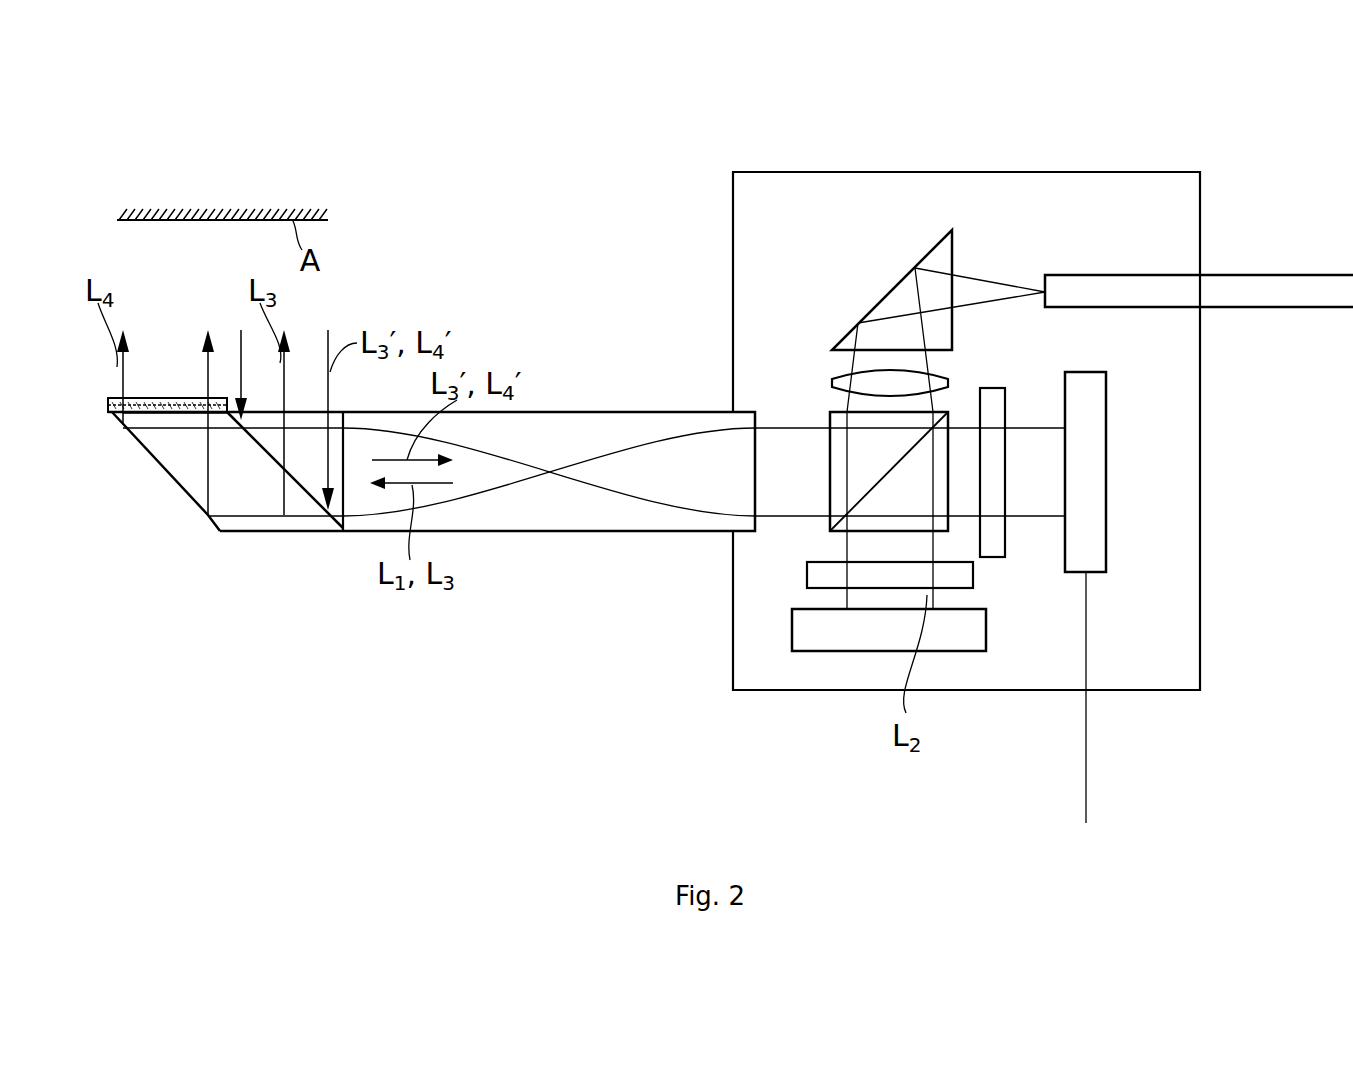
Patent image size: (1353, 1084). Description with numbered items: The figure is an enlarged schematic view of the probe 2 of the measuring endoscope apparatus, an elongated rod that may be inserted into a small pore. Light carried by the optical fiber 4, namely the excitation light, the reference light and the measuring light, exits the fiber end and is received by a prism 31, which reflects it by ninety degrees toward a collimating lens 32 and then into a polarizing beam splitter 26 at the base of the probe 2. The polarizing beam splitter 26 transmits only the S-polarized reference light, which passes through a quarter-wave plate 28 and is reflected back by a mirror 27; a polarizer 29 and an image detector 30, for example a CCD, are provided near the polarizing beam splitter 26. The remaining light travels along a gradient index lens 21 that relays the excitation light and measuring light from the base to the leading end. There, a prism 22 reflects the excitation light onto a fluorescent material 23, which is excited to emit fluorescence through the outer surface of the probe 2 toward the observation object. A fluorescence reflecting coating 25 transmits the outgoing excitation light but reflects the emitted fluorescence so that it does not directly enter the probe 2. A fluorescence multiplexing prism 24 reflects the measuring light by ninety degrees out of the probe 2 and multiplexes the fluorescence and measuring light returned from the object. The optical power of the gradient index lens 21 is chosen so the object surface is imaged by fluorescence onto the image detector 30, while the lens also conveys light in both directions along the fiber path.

The probe 2 is at (624, 190).
The optical fiber 4 is at (1270, 273).
The gradient index lens 21 is at (623, 408).
The prism 22 is at (177, 483).
The fluorescent material 23 is at (108, 398).
The fluorescence multiplexing prism 24 is at (298, 488).
The fluorescence reflecting coating 25 is at (158, 414).
The polarizing beam splitter 26 is at (830, 413).
The mirror 27 is at (986, 628).
The quarter-wave plate 28 is at (807, 572).
The polarizer 29 is at (987, 557).
The image detector 30 is at (1106, 437).
The prism 31 is at (930, 250).
The collimating lens 32 is at (953, 380).